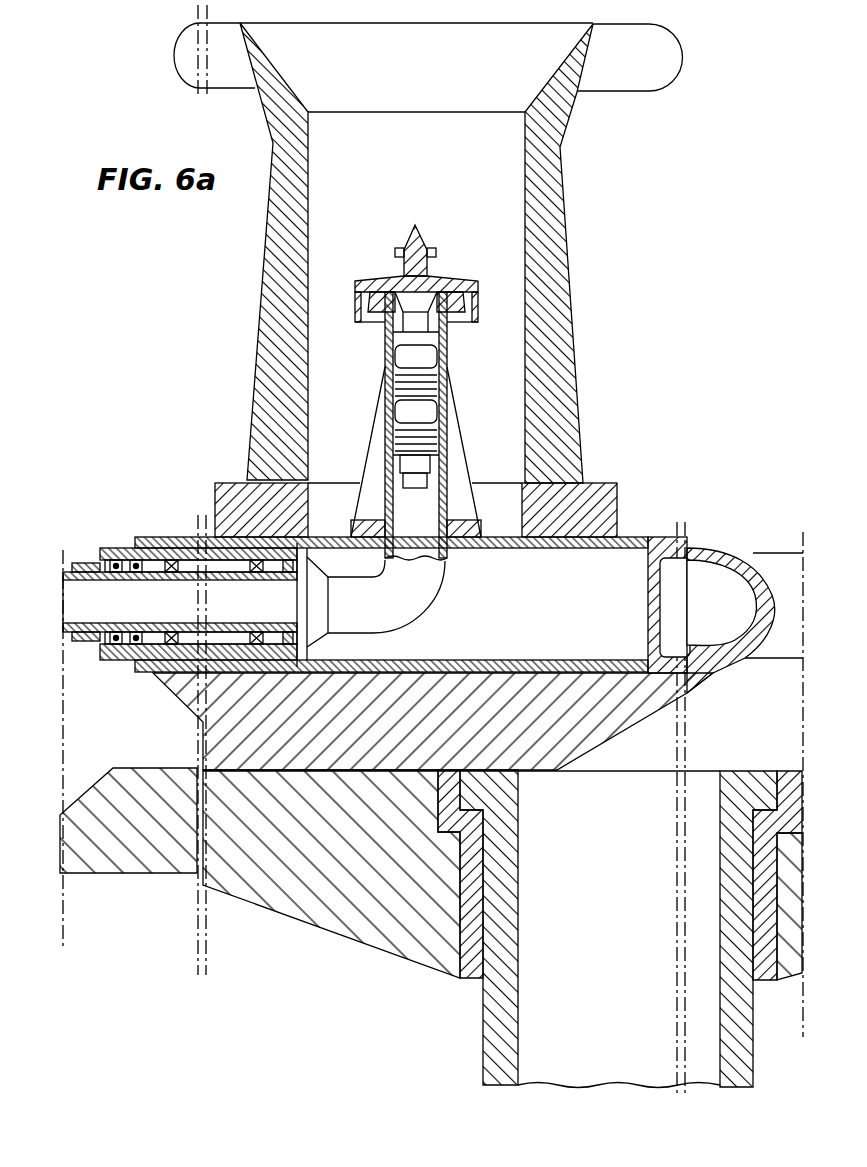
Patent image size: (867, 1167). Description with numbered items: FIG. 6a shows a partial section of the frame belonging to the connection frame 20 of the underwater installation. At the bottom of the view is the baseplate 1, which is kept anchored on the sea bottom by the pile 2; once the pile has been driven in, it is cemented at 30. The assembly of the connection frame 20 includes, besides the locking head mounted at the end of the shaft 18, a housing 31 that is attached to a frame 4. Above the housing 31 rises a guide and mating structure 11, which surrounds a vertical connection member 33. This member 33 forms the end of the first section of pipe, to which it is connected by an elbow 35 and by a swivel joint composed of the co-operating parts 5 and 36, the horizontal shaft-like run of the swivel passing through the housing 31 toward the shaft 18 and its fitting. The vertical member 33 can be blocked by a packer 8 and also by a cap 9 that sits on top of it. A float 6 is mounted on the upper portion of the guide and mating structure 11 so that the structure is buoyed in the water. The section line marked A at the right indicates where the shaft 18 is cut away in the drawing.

The baseplate 1 is at (318, 908).
The pile 2 is at (498, 1015).
The frame 4 is at (178, 690).
The swivel joint part 5 is at (137, 660).
The float 6 is at (183, 52).
The packer 8 is at (425, 360).
The cap 9 is at (447, 284).
The guide and mating structure 11 is at (285, 262).
The shaft 18 is at (770, 573).
The connection frame 20 is at (200, 468).
The cementing 30 is at (468, 910).
The housing 31 is at (630, 537).
The vertical connection member 33 is at (383, 345).
The elbow 35 is at (412, 598).
The swivel joint part 36 is at (65, 570).
The section line A is at (803, 542).